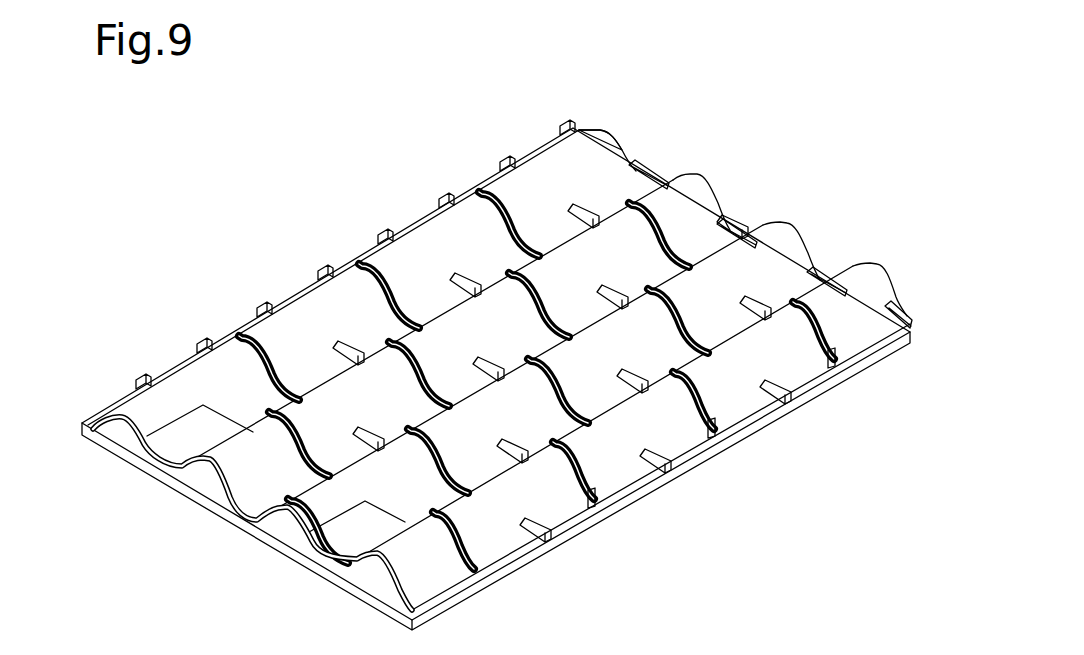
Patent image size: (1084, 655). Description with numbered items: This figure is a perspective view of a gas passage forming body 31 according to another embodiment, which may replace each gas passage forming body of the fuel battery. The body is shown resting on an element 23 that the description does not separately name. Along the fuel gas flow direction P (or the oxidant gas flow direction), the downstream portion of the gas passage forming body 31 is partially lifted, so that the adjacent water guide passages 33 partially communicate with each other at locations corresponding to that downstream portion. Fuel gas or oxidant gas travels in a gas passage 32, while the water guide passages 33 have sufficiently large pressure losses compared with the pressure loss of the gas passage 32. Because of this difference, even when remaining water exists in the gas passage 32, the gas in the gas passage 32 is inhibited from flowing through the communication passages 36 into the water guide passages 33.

The base plate 23 is at (447, 609).
The gas passage forming body 31 is at (633, 99).
The gas passage 32 is at (589, 179).
The water guide passage 33 is at (146, 437).
The communication passage 36 is at (802, 340).
The fuel gas flow direction P is at (819, 208).